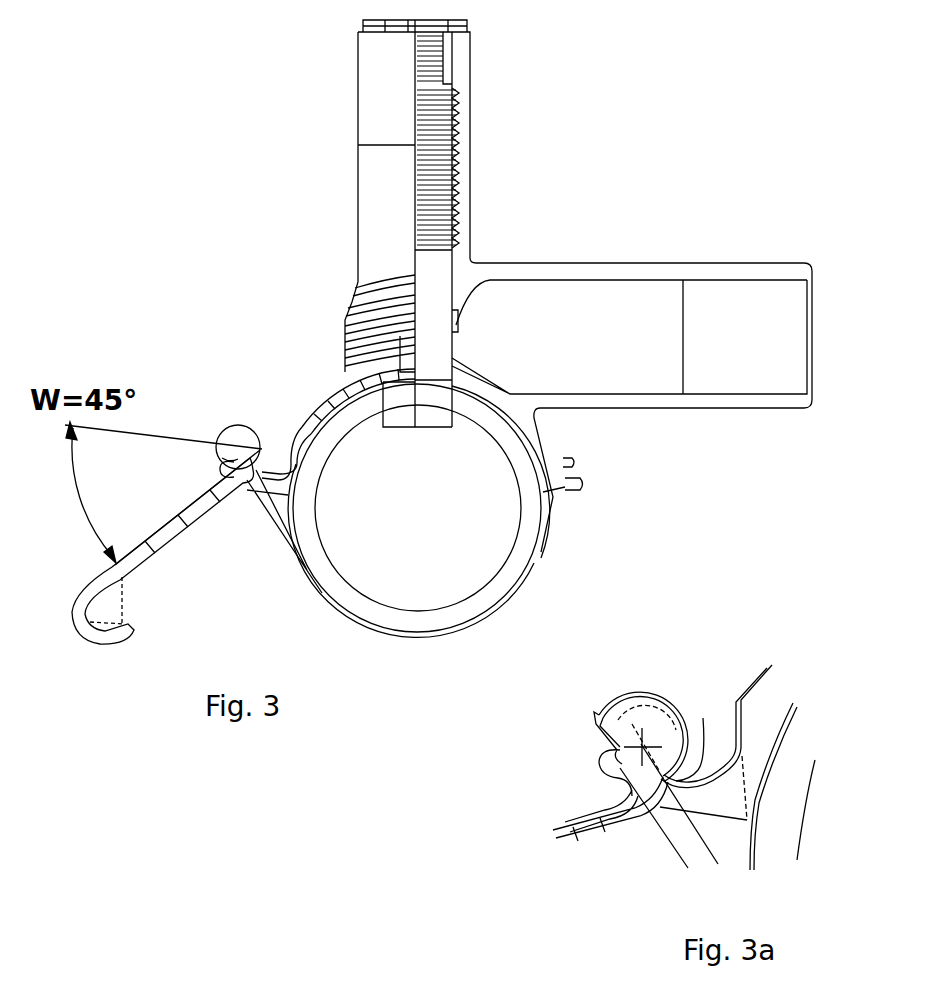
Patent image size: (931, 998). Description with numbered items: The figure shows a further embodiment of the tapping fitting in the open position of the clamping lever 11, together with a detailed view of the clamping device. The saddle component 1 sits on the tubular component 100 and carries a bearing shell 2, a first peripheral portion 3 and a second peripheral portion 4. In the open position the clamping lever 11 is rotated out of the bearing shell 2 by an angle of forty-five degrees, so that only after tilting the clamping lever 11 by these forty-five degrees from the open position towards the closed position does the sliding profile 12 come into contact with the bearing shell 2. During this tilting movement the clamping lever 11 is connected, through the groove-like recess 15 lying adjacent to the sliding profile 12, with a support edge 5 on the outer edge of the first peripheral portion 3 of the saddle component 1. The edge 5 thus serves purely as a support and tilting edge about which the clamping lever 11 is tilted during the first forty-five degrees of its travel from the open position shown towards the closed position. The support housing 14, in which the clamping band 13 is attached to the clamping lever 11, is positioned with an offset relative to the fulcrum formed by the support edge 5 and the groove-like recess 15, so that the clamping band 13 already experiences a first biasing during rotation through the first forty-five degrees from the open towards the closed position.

In FIG. 3, the saddle component 1 is at (557, 268).
In FIG. 3A, the saddle component 1 is at (778, 703).
In FIG. 3, the bearing shell 2 is at (286, 458).
In FIG. 3A, the bearing shell 2 is at (737, 750).
In FIG. 3A, the first peripheral portion 3 is at (727, 813).
In FIG. 3, the second peripheral portion 4 is at (578, 483).
In FIG. 3A, the edge 5 is at (660, 785).
In FIG. 3, the clamping lever 11 is at (75, 633).
In FIG. 3A, the clamping lever 11 is at (570, 833).
In FIG. 3, the sliding profile 12 is at (232, 432).
In FIG. 3A, the sliding profile 12 is at (633, 692).
In FIG. 3, the clamping band 13 is at (557, 508).
In FIG. 3A, the clamping band 13 is at (688, 868).
In FIG. 3, the support housing 14 is at (227, 469).
In FIG. 3A, the support housing 14 is at (624, 780).
In FIG. 3A, the groove-like recess 15 is at (697, 735).
In FIG. 3, the tubular component 100 is at (400, 620).
In FIG. 3A, the tubular component 100 is at (788, 800).